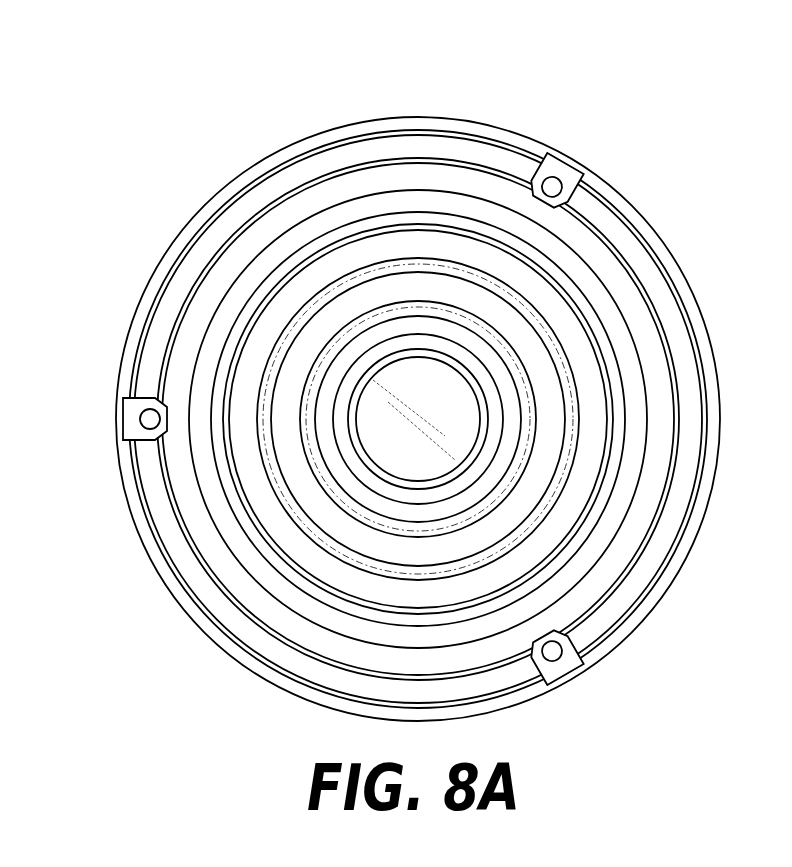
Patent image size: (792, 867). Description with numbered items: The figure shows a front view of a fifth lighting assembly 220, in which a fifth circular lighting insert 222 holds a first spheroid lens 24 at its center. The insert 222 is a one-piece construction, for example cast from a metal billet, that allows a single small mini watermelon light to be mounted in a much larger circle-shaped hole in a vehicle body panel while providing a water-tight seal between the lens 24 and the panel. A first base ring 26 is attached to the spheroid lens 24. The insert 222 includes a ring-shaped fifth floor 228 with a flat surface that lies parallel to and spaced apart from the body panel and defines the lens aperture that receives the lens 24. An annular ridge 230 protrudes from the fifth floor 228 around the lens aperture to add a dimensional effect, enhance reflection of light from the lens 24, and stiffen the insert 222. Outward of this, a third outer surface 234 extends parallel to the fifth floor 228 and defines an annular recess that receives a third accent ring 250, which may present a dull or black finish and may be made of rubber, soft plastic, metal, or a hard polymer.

The fifth lighting assembly 220 is at (210, 156).
The fifth circular lighting insert 222 is at (610, 190).
The third outer surface 234 is at (703, 350).
The third accent ring 250 is at (327, 160).
The fifth floor 228 is at (253, 353).
The annular ridge 230 is at (492, 528).
The first base ring 26 is at (489, 450).
The first spheroid lens 24 is at (412, 373).